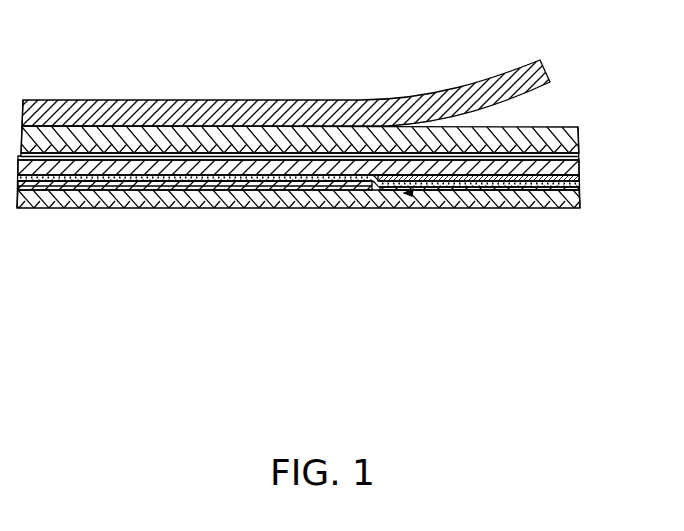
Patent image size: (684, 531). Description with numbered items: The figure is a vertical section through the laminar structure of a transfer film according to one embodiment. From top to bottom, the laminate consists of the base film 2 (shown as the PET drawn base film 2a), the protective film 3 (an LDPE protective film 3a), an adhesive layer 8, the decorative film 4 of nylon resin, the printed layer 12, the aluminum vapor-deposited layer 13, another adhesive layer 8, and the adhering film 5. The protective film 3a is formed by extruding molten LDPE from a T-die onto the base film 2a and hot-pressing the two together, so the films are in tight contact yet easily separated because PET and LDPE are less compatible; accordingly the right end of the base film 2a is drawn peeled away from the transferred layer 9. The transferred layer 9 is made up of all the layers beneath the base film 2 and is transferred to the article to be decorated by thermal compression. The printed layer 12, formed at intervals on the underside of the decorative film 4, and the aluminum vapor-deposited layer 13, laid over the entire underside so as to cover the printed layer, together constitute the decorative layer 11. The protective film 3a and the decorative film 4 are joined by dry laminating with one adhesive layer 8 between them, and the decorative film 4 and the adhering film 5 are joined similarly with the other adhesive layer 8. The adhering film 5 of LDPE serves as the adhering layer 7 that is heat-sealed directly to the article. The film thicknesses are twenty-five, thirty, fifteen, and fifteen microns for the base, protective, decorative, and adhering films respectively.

The base film 2 is at (286, 67).
The base film 2a is at (472, 88).
The protective film 3 is at (300, 86).
The protective film 3a is at (87, 138).
The decorative film 4 is at (192, 167).
The adhering film 5 is at (99, 208).
The adhering layer 7 is at (298, 235).
The adhesive layer 8 is at (147, 158).
The transferred layer 9 is at (603, 128).
The decorative layer 11 is at (298, 267).
The printed layer 12 is at (447, 183).
The aluminum vapor-deposited layer 13 is at (305, 184).